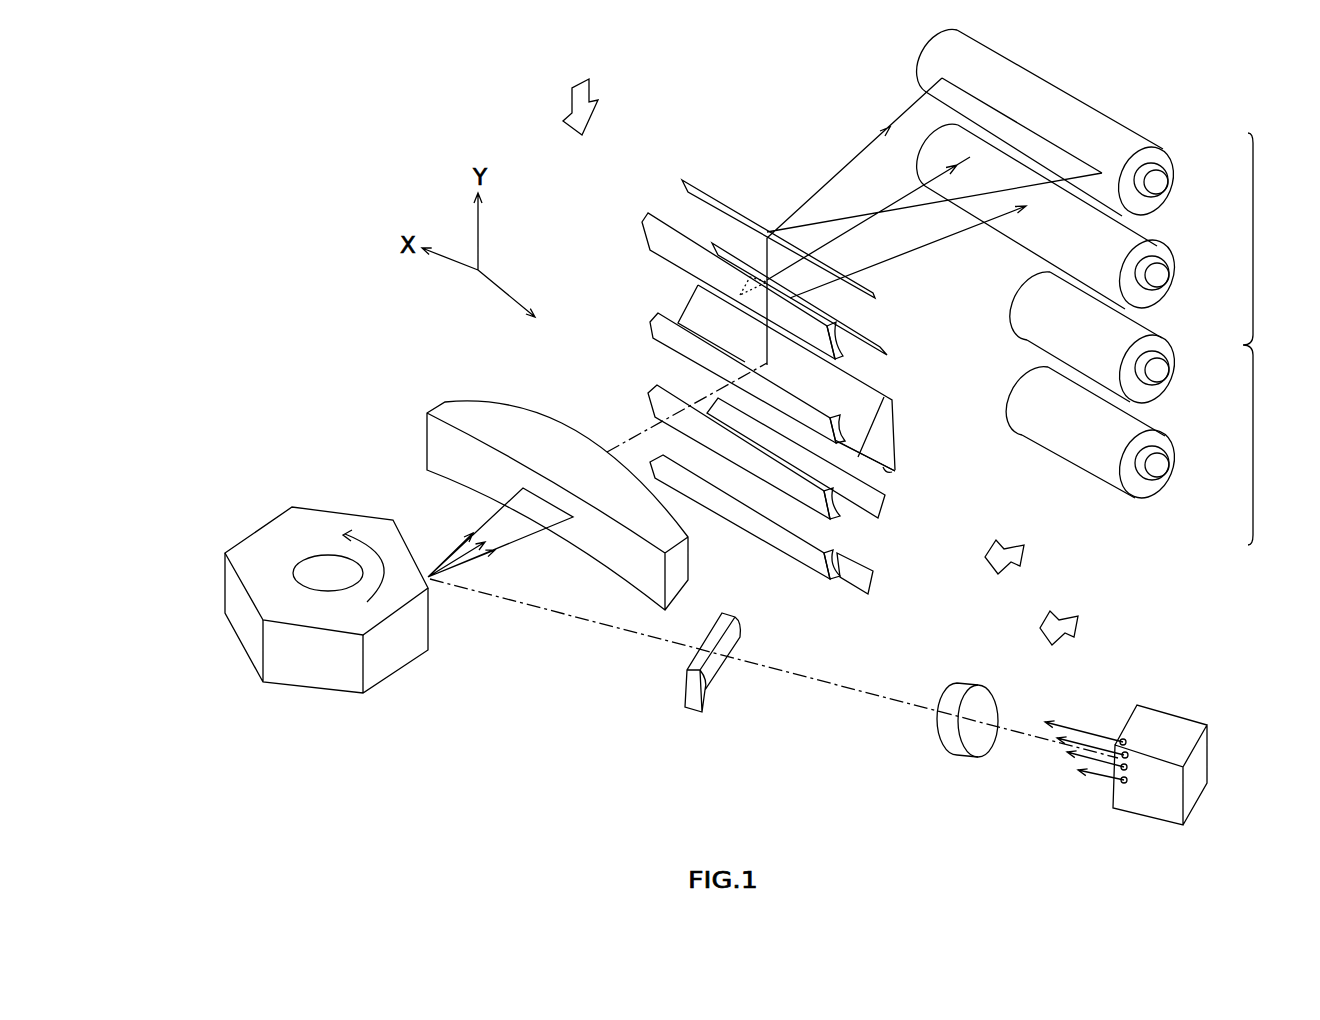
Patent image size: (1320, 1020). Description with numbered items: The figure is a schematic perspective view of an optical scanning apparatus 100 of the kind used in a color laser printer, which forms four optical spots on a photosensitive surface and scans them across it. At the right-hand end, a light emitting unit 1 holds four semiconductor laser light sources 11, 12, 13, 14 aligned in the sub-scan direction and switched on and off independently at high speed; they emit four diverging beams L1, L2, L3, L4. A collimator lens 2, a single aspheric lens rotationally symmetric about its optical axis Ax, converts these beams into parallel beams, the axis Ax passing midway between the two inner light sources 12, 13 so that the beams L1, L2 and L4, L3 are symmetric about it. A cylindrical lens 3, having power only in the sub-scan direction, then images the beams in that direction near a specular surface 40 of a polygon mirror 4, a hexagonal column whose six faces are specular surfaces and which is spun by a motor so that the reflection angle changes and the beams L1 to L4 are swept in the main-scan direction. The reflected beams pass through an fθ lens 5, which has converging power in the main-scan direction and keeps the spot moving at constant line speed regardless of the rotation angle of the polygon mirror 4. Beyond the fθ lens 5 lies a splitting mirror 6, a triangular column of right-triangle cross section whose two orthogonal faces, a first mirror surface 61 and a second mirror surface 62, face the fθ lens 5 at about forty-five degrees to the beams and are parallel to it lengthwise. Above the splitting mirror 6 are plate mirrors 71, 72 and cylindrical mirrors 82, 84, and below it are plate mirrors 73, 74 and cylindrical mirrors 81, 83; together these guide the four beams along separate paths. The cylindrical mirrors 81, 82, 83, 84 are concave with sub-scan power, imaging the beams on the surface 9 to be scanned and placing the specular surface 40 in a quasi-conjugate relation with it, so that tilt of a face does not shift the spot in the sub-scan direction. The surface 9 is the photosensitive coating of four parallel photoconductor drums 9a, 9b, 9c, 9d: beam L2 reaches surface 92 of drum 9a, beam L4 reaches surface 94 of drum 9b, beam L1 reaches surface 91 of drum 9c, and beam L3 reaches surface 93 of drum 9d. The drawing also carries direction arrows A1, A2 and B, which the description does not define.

The light emitting unit 1 is at (1184, 694).
The collimator lens 2 is at (968, 690).
The cylindrical lens 3 is at (688, 712).
The polygon mirror 4 is at (278, 530).
The fθ lens 5 is at (448, 412).
The splitting mirror 6 is at (887, 422).
The surface to be scanned 9 is at (1260, 339).
The photoconductor drum 9a is at (923, 70).
The photoconductor drum 9b is at (921, 170).
The photoconductor drum 9c is at (1027, 305).
The photoconductor drum 9d is at (1022, 403).
The light source 11 is at (1128, 779).
The light source 12 is at (1128, 766).
The light source 13 is at (1128, 752).
The light source 14 is at (1127, 733).
The specular surface 40 is at (388, 663).
The first mirror surface 61 is at (887, 395).
The second mirror surface 62 is at (890, 472).
The plate mirror 71 is at (868, 327).
The plate mirror 72 is at (682, 187).
The plate mirror 73 is at (875, 582).
The plate mirror 74 is at (888, 508).
The cylindrical mirror 81 is at (653, 403).
The cylindrical mirror 82 is at (648, 232).
The cylindrical mirror 83 is at (786, 550).
The cylindrical mirror 84 is at (655, 325).
The surface to be scanned 91 is at (1109, 376).
The surface to be scanned 92 is at (1072, 110).
The surface to be scanned 93 is at (1109, 471).
The surface to be scanned 94 is at (1109, 281).
The optical scanning apparatus 100 is at (448, 742).
The beam L1 is at (1102, 773).
The beam L2 is at (898, 707).
The beam L3 is at (1102, 742).
The beam L4 is at (1063, 722).
The optical axis Ax is at (1000, 715).
The direction A1 is at (1078, 626).
The direction A2 is at (1024, 553).
The direction B is at (572, 112).